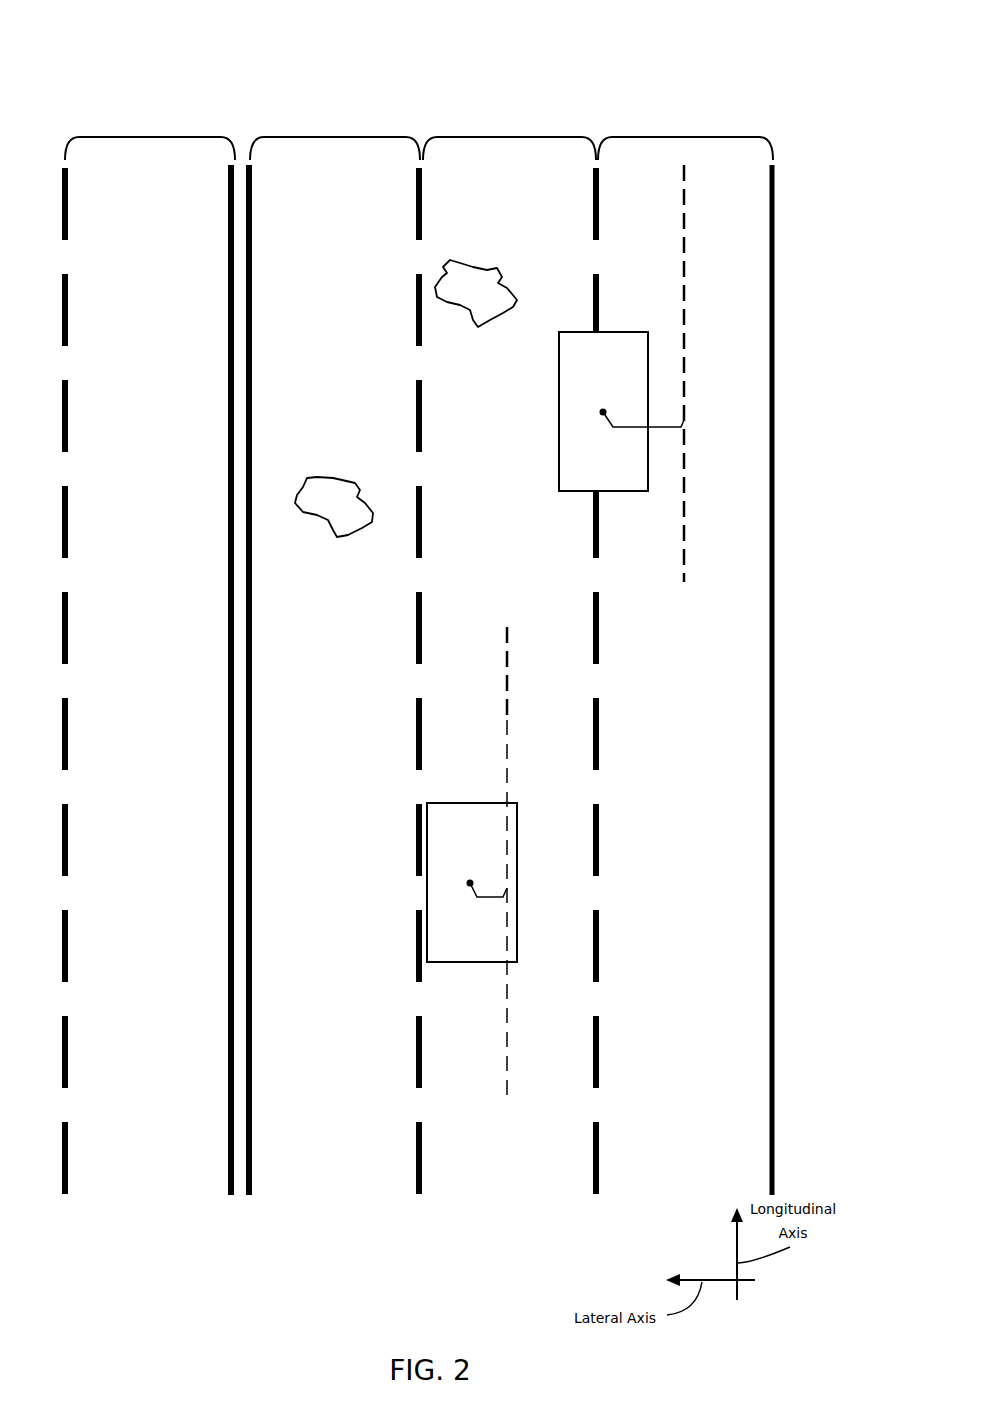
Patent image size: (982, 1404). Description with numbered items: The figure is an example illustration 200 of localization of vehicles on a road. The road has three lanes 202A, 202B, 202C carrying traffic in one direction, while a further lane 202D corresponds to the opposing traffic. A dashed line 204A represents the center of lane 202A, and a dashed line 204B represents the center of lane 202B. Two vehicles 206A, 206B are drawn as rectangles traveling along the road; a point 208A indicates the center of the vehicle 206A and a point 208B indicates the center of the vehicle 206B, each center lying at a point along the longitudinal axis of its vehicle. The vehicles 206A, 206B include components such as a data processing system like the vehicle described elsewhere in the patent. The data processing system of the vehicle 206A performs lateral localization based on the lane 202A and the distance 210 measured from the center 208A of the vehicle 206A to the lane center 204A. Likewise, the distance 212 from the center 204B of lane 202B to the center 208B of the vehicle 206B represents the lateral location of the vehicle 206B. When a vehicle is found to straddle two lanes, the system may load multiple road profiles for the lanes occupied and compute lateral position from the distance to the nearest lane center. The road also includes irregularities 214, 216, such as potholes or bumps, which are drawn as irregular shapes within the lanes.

The illustration 200 is at (402, 27).
The lane 202A is at (683, 137).
The lane 202B is at (508, 137).
The lane 202C is at (334, 137).
The lane 202D is at (147, 137).
The line 204A is at (684, 236).
The line 204B is at (509, 707).
The vehicle 206A is at (559, 420).
The vehicle 206B is at (427, 890).
The point 208A is at (598, 400).
The point 208B is at (465, 870).
The distance 210 is at (647, 428).
The distance 212 is at (495, 897).
The irregularity 214 is at (487, 263).
The irregularity 216 is at (342, 478).